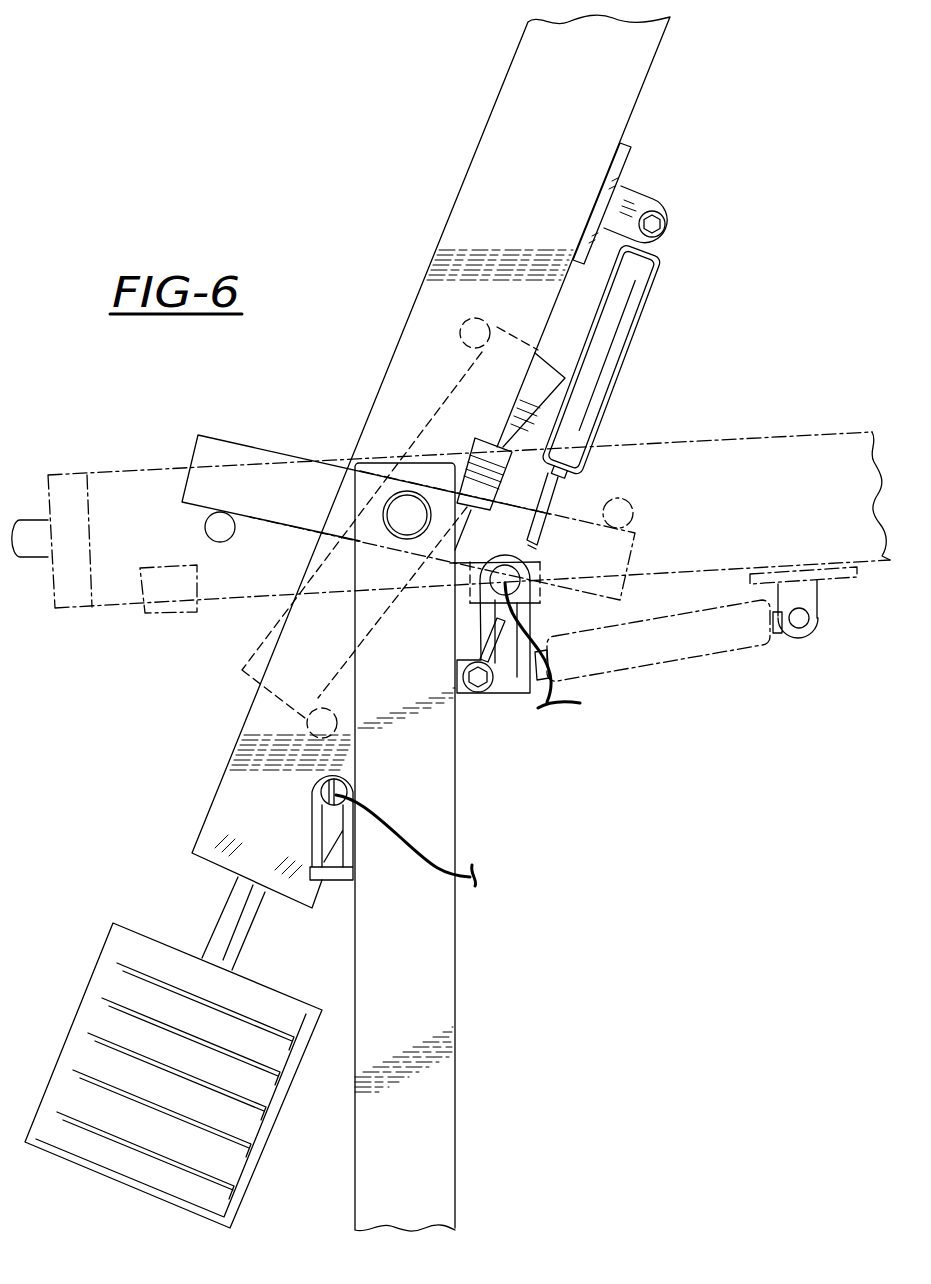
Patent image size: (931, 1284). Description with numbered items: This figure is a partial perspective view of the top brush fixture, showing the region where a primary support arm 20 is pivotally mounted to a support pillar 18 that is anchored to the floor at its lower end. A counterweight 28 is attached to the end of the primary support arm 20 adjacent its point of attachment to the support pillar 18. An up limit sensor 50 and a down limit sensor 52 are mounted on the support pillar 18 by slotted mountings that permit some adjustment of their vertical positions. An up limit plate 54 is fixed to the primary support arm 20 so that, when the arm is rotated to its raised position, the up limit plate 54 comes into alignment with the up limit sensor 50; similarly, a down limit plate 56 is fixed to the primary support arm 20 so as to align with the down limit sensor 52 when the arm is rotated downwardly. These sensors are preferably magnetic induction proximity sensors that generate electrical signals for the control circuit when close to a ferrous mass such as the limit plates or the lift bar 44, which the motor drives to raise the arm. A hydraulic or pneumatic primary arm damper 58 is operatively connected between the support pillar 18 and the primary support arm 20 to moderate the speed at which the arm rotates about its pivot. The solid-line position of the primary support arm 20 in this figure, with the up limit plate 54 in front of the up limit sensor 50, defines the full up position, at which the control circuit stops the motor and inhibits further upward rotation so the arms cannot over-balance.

The support pillar 18 is at (440, 1066).
The primary support arm 20 is at (460, 208).
The counterweight 28 is at (108, 978).
The lift bar 44 is at (253, 670).
The up limit sensor 50 is at (327, 795).
The down limit sensor 52 is at (515, 585).
The up limit plate 54 is at (326, 760).
The down limit plate 56 is at (490, 488).
The primary arm damper 58 is at (640, 313).